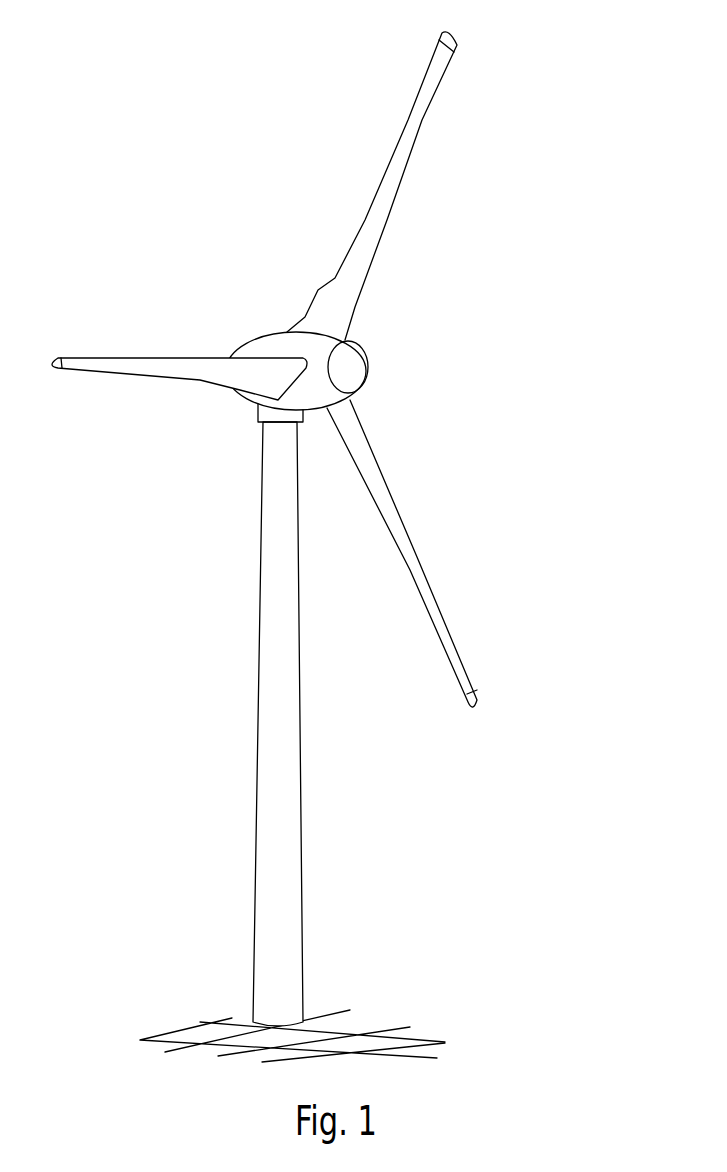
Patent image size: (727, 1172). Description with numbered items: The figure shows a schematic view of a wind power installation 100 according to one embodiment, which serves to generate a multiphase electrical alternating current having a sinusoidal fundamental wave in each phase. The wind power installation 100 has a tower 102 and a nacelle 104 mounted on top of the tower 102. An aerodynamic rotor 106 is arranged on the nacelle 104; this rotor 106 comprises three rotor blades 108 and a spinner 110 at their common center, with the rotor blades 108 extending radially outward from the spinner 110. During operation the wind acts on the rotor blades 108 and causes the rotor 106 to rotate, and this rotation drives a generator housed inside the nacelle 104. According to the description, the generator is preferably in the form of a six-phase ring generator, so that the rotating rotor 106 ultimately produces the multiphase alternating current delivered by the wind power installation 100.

The wind power installation 100 is at (208, 498).
The tower 102 is at (285, 817).
The nacelle 104 is at (275, 345).
The aerodynamic rotor 106 is at (438, 291).
The rotor blade 108 is at (408, 148).
The spinner 110 is at (352, 370).